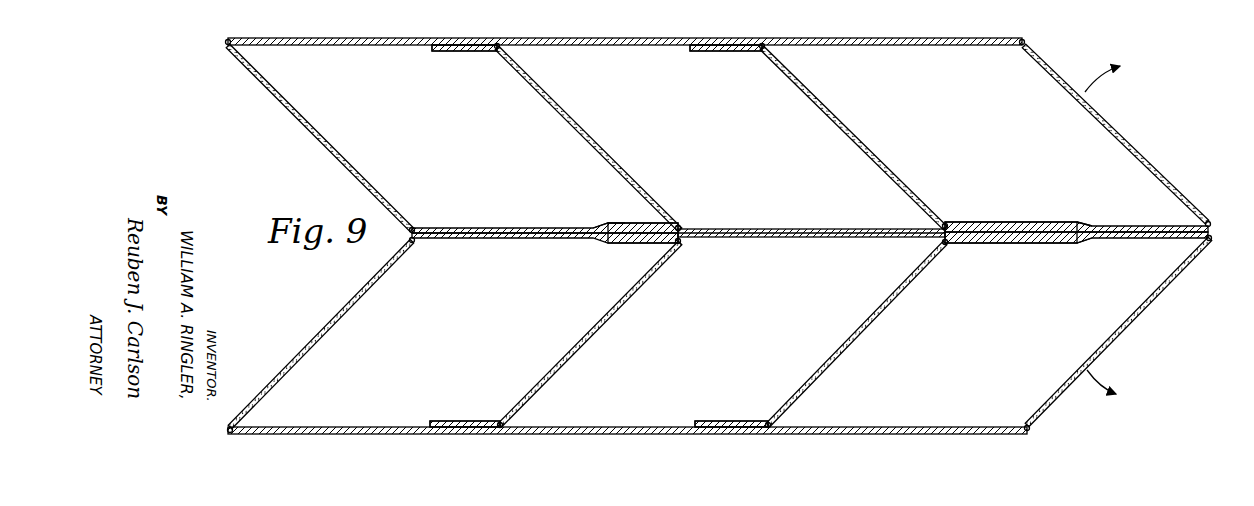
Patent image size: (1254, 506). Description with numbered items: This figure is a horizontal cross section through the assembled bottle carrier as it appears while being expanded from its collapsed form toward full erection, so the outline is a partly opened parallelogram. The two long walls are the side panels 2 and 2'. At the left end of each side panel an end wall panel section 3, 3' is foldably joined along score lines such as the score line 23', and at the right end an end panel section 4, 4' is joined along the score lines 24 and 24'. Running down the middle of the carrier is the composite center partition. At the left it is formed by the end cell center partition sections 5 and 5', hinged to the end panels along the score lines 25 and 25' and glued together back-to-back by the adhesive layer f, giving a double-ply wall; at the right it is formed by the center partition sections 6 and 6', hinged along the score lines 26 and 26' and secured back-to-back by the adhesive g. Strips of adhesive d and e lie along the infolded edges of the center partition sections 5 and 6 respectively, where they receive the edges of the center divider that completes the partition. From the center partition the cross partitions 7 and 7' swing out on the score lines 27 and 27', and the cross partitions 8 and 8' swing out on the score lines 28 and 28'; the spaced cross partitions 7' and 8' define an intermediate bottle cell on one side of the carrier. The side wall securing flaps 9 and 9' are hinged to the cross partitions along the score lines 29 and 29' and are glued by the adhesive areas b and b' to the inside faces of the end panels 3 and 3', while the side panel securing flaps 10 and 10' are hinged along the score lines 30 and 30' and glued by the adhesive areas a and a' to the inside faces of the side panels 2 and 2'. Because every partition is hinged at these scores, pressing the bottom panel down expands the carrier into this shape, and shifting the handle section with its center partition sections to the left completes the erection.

The side panel 2 is at (627, 442).
The side panel 2' is at (625, 29).
The end wall panel section 3 is at (320, 333).
The end wall panel section 3' is at (319, 137).
The end panel section 4 is at (1118, 332).
The end panel section 4' is at (1115, 134).
The end cell center partition section 5 is at (545, 256).
The end cell center partition section 5' is at (545, 213).
The end cell center partition section 6 is at (1076, 256).
The end cell center partition section 6' is at (1076, 206).
The cross partition 7 is at (590, 333).
The cross partition 7' is at (588, 138).
The cross partition 8 is at (856, 334).
The cross partition 8' is at (853, 138).
The side wall securing flap 9 is at (465, 402).
The side wall securing flap 9' is at (464, 70).
The side panel securing flap 10 is at (731, 403).
The side panel securing flap 10' is at (726, 64).
The score line 23' is at (203, 41).
The score line 24 is at (1048, 440).
The score line 24' is at (1045, 31).
The score line 25 is at (423, 260).
The score line 25' is at (427, 204).
The score line 26 is at (1228, 255).
The score line 26' is at (1227, 205).
The score line 27 is at (697, 260).
The score line 27' is at (703, 206).
The score line 28 is at (957, 271).
The score line 28' is at (951, 194).
The score line 29 is at (497, 398).
The score line 29' is at (506, 80).
The score line 30 is at (780, 389).
The score line 30' is at (768, 79).
The area of adhesive a is at (708, 228).
The area of adhesive a' is at (726, 65).
The area of adhesive b is at (465, 441).
The area of adhesive b' is at (463, 26).
The area of adhesive d is at (635, 245).
The area of adhesive e is at (1018, 245).
The adhesive layer f is at (632, 222).
The adhesive g is at (1048, 221).